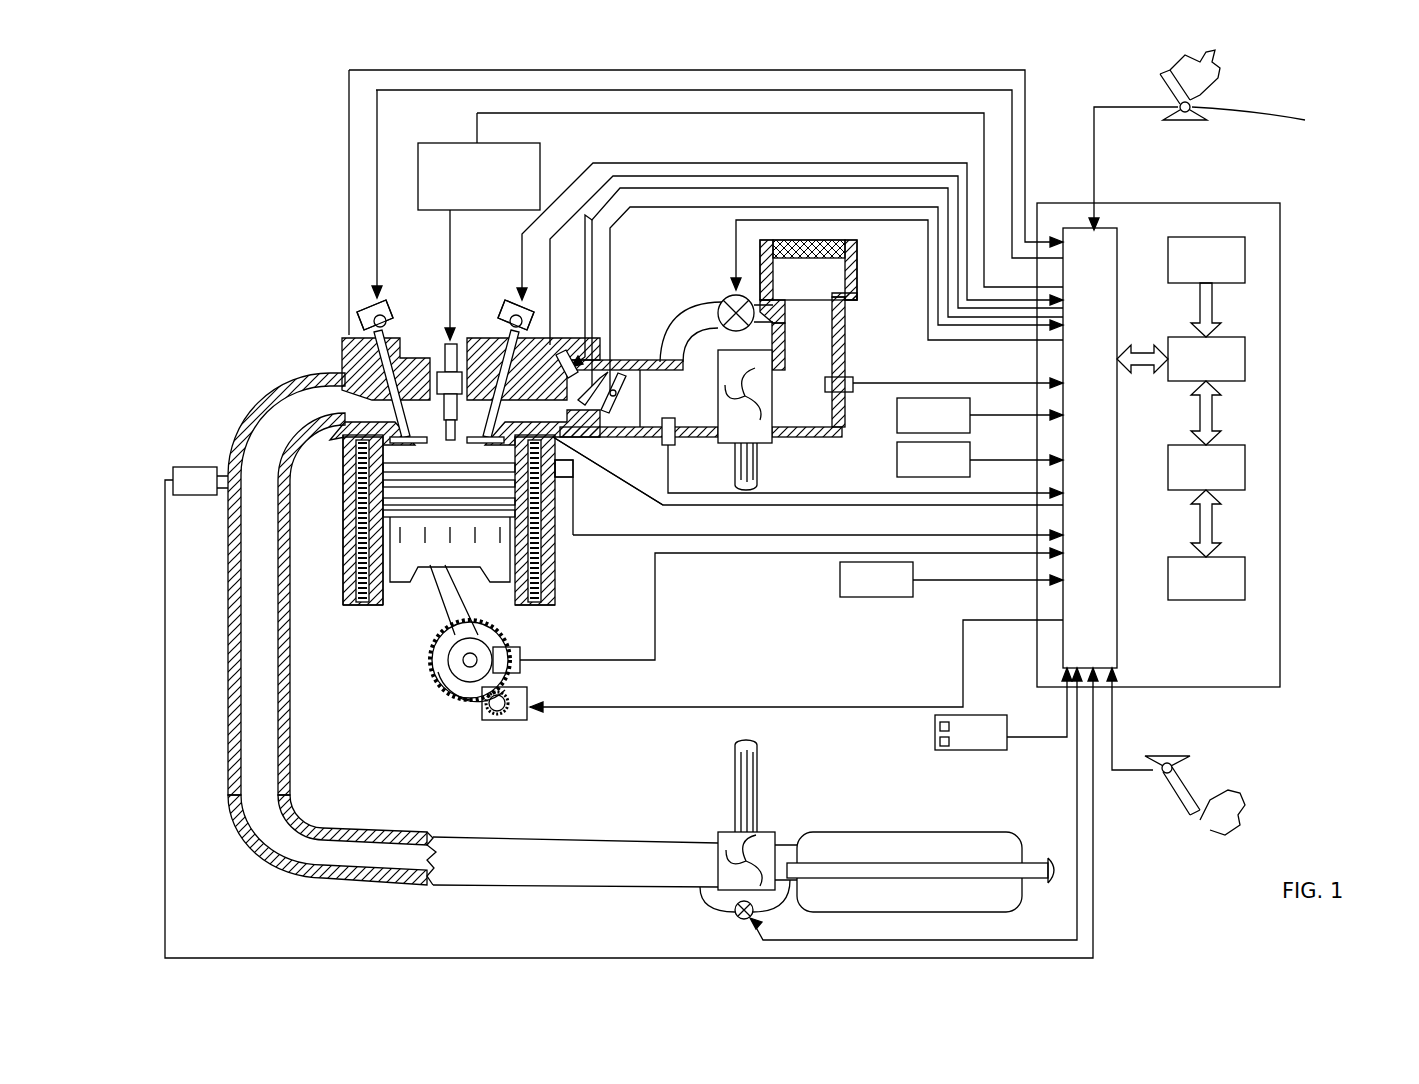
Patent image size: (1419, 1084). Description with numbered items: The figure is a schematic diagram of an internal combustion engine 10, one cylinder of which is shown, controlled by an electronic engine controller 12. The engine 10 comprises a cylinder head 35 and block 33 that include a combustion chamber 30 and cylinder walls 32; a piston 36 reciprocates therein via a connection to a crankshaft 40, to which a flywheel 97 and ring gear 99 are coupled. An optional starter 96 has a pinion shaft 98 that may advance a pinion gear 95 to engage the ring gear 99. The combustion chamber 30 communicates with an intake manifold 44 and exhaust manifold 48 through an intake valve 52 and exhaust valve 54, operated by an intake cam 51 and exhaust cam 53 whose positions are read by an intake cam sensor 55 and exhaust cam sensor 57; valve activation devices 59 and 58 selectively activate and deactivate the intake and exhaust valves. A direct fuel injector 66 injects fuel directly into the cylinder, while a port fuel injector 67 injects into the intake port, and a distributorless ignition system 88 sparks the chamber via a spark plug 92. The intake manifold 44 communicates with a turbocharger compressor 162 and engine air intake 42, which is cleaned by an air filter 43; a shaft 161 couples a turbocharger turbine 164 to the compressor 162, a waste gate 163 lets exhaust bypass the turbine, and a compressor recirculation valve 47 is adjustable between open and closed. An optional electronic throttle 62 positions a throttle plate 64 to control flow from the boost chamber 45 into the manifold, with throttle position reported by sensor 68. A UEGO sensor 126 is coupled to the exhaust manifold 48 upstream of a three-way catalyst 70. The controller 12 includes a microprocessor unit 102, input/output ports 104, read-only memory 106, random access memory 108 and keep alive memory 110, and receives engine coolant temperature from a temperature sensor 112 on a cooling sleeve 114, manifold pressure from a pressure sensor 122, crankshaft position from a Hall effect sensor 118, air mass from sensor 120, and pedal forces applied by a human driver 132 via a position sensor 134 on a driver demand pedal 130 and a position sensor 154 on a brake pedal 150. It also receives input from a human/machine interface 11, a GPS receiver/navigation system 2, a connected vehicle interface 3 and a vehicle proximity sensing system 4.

The internal combustion engine 10 is at (272, 286).
The electronic engine controller 12 is at (1280, 205).
The GPS receiver/navigation system 2 is at (980, 415).
The connected vehicle interface 3 is at (980, 459).
The vehicle proximity sensing system 4 is at (1003, 709).
The human/machine interface 11 is at (951, 579).
The combustion chamber 30 is at (352, 560).
The cylinder walls 32 is at (383, 612).
The block 33 is at (338, 492).
The cylinder head 35 is at (338, 338).
The piston 36 is at (432, 575).
The crankshaft 40 is at (462, 682).
The engine air intake 42 is at (672, 262).
The air filter 43 is at (822, 252).
The intake manifold 44 is at (585, 413).
The boost chamber 45 is at (690, 413).
The compressor recirculation valve 47 is at (725, 298).
The exhaust manifold 48 is at (322, 420).
The intake cam 51 is at (500, 290).
The intake valve 52 is at (488, 390).
The exhaust cam 53 is at (377, 300).
The exhaust valve 54 is at (372, 385).
The intake cam sensor 55 is at (536, 318).
The exhaust cam sensor 57 is at (366, 322).
The valve activation device 58 is at (387, 322).
The valve activation device 59 is at (510, 323).
The electronic throttle 62 is at (614, 393).
The throttle plate 64 is at (645, 400).
The direct fuel injector 66 is at (574, 470).
The port fuel injector 67 is at (563, 356).
The throttle position sensor 68 is at (600, 378).
The three-way catalyst 70 is at (840, 832).
The distributorless ignition system 88 is at (540, 152).
The spark plug 92 is at (456, 345).
The pinion gear 95 is at (503, 720).
The starter 96 is at (522, 722).
The flywheel 97 is at (442, 670).
The pinion shaft 98 is at (485, 715).
The ring gear 99 is at (468, 703).
The microprocessor unit 102 is at (1245, 355).
The input/output ports 104 is at (1117, 232).
The read-only memory 106 is at (1245, 258).
The random access memory 108 is at (1245, 465).
The keep alive memory 110 is at (1245, 575).
The temperature sensor 112 is at (586, 497).
The cooling sleeve 114 is at (556, 585).
The Hall effect sensor 118 is at (522, 650).
The air mass sensor 120 is at (850, 380).
The pressure sensor 122 is at (665, 445).
The Universal Exhaust Gas Oxygen (UEGO) sensor 126 is at (173, 468).
The driver demand pedal 130 is at (1160, 88).
The human driver 132 is at (1220, 68).
The position sensor 134 is at (1265, 122).
The brake pedal 150 is at (1190, 818).
The position sensor 154 is at (1160, 765).
The shaft 161 is at (735, 458).
The turbocharger compressor 162 is at (758, 432).
The waste gate 163 is at (738, 918).
The turbocharger turbine 164 is at (728, 832).